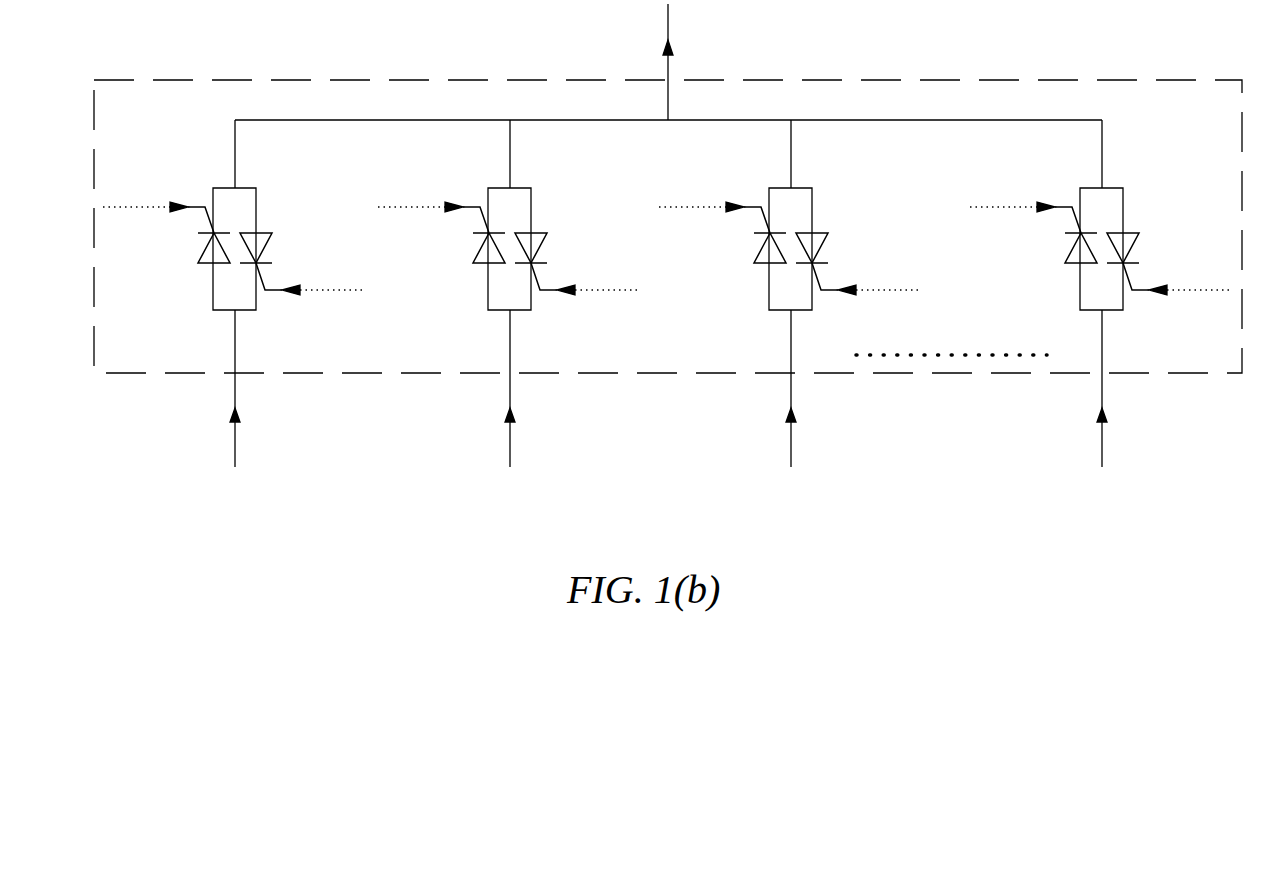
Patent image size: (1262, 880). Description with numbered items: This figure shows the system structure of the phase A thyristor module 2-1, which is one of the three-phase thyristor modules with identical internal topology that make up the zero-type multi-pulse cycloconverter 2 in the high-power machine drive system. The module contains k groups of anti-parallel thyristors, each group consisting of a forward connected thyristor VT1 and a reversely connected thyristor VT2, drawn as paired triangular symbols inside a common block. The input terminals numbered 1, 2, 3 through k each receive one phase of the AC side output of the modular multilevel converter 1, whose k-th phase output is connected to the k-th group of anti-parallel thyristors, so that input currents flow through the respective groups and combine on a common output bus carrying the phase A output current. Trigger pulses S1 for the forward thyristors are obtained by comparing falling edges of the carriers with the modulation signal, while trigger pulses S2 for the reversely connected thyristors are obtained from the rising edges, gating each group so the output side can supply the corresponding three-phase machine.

The phase A thyristor module 2-1 is at (213, 80).
The modular multilevel converter 1 is at (233, 295).
The multi-pulse cycloconverter 2 is at (508, 295).
The input port 3 is at (789, 295).
The input port k is at (1100, 295).